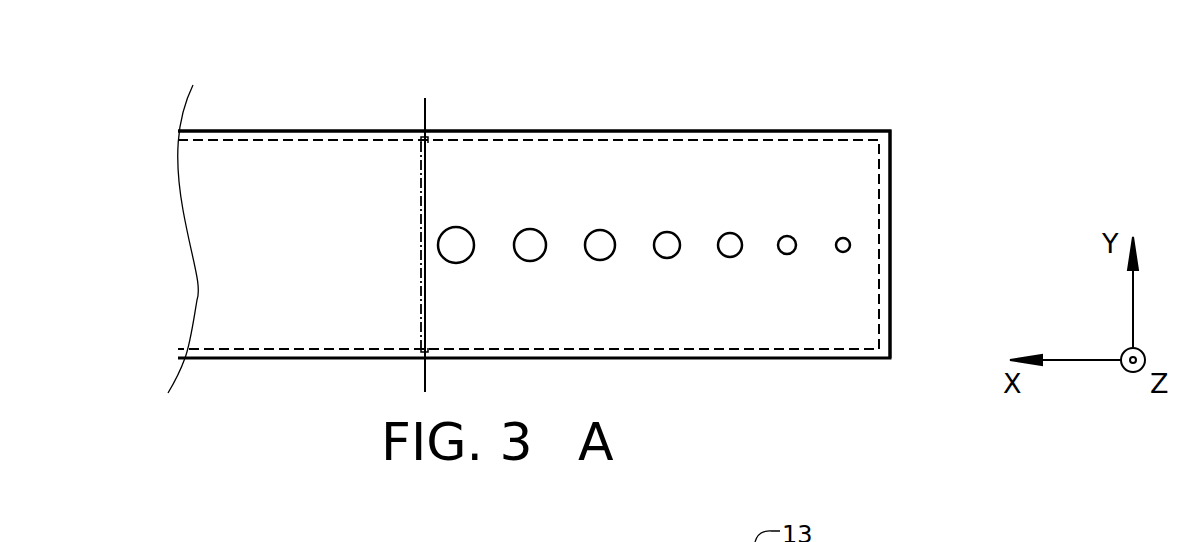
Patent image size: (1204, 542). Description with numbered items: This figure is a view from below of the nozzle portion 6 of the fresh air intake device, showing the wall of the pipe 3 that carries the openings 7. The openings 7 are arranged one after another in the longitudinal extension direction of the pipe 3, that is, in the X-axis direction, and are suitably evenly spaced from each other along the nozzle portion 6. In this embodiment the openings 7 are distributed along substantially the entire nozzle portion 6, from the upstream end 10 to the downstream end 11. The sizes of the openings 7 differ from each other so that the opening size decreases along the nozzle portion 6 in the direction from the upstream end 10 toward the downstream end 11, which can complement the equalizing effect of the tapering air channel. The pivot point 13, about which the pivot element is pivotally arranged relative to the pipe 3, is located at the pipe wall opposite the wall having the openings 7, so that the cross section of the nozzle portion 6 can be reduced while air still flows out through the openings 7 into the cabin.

The pipe 3 is at (286, 295).
The nozzle portion 6 is at (796, 297).
The openings 7 is at (455, 246).
The upstream end 10 is at (412, 118).
The downstream end 11 is at (863, 100).
The pivot point 13 is at (425, 112).